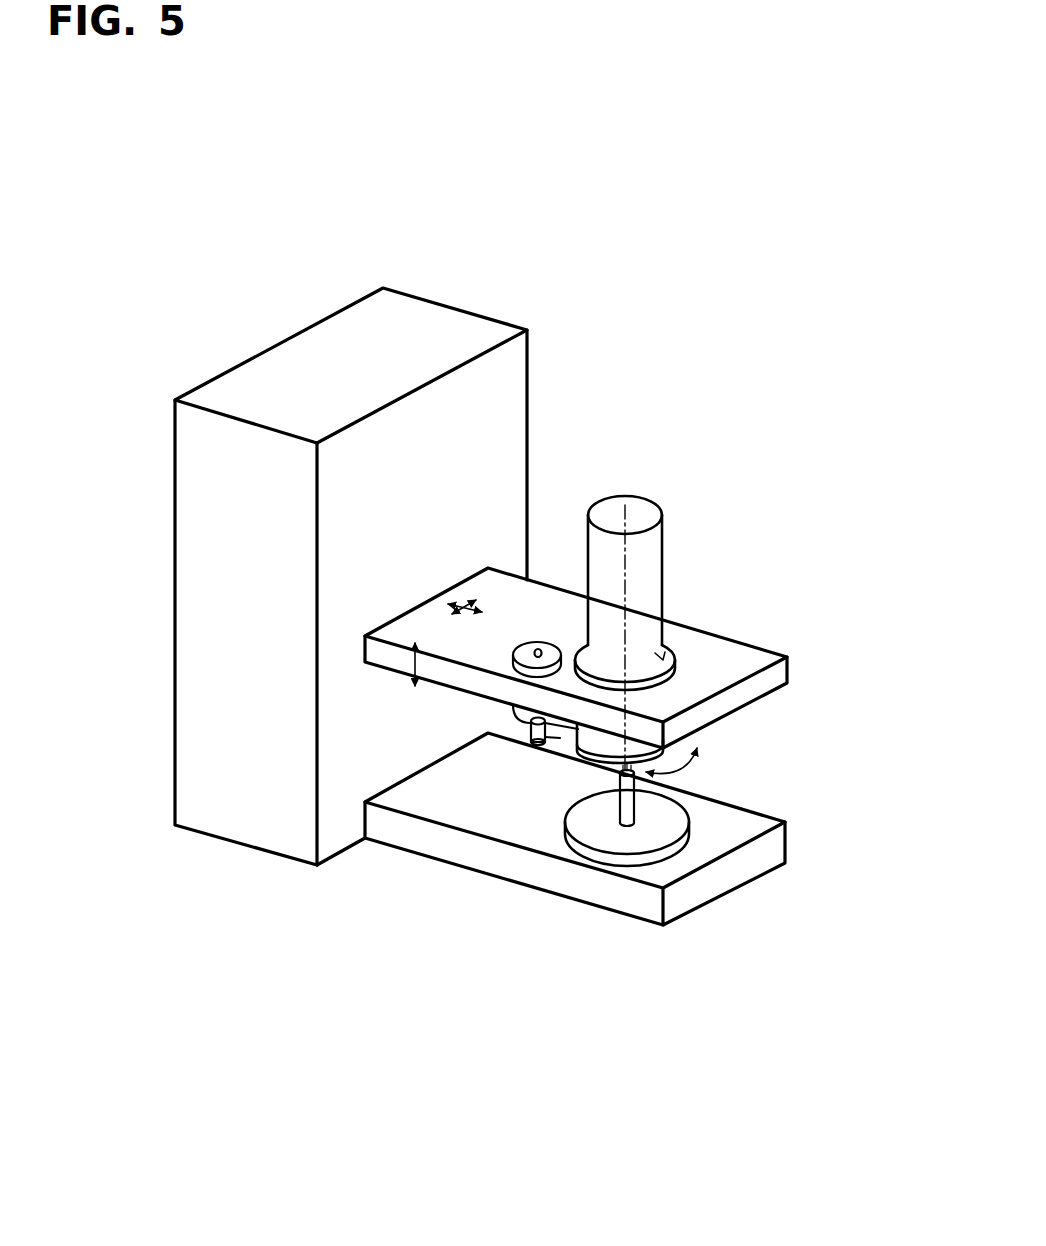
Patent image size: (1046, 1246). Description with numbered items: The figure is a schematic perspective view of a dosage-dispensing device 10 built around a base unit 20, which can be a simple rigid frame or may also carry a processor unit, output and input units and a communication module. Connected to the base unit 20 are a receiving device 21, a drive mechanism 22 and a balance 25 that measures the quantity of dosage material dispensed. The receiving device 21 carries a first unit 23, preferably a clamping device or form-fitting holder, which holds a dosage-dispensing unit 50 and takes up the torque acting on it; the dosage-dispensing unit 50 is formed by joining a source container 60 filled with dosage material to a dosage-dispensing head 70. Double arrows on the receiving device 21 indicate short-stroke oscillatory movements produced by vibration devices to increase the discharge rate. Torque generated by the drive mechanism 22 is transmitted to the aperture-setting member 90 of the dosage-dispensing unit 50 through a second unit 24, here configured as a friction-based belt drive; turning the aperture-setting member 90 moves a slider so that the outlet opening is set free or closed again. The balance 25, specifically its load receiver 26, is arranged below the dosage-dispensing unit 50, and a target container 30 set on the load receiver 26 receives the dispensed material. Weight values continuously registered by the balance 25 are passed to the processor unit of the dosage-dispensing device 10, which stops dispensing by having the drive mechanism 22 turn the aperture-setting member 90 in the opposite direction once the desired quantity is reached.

The dosage-dispensing device 10 is at (604, 292).
The base unit 20 is at (248, 552).
The receiving device 21 is at (705, 658).
The drive mechanism 22 is at (522, 650).
The first unit 23 is at (663, 662).
The second unit 24 is at (560, 743).
The balance 25 is at (735, 863).
The load receiver 26 is at (657, 820).
The target container 30 is at (628, 800).
The dosage-dispensing unit 50 is at (681, 573).
The source container 60 is at (638, 553).
The dosage-dispensing head 70 is at (603, 772).
The aperture-setting member 90 is at (596, 756).